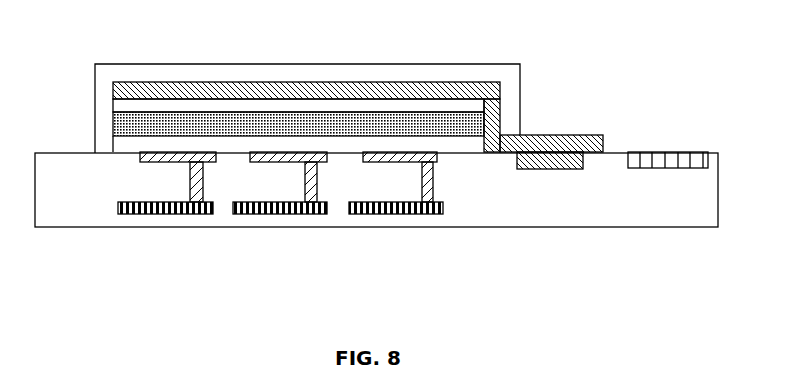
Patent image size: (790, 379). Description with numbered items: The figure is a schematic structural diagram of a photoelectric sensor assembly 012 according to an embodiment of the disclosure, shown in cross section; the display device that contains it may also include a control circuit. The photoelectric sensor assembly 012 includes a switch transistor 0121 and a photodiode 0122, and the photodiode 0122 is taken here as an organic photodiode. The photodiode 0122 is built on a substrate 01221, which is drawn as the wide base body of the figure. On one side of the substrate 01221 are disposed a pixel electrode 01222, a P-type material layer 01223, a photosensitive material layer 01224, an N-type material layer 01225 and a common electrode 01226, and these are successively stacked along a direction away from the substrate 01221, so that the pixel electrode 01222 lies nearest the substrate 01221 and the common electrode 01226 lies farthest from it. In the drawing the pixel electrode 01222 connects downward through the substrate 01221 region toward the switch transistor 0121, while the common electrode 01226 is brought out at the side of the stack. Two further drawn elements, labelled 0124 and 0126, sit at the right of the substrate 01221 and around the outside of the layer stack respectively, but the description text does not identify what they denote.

The photoelectric sensor assembly 012 is at (75, 41).
The switch transistor 0121 is at (125, 205).
The photodiode 0122 is at (593, 278).
The substrate 01221 is at (80, 202).
The pixel electrode 01222 is at (180, 162).
The P-type material layer 01223 is at (284, 152).
The photosensitive material layer 01224 is at (369, 127).
The N-type material layer 01225 is at (455, 107).
The common electrode 01226 is at (552, 146).
The connection terminal 0124 is at (683, 160).
The encapsulation cover 0126 is at (510, 101).